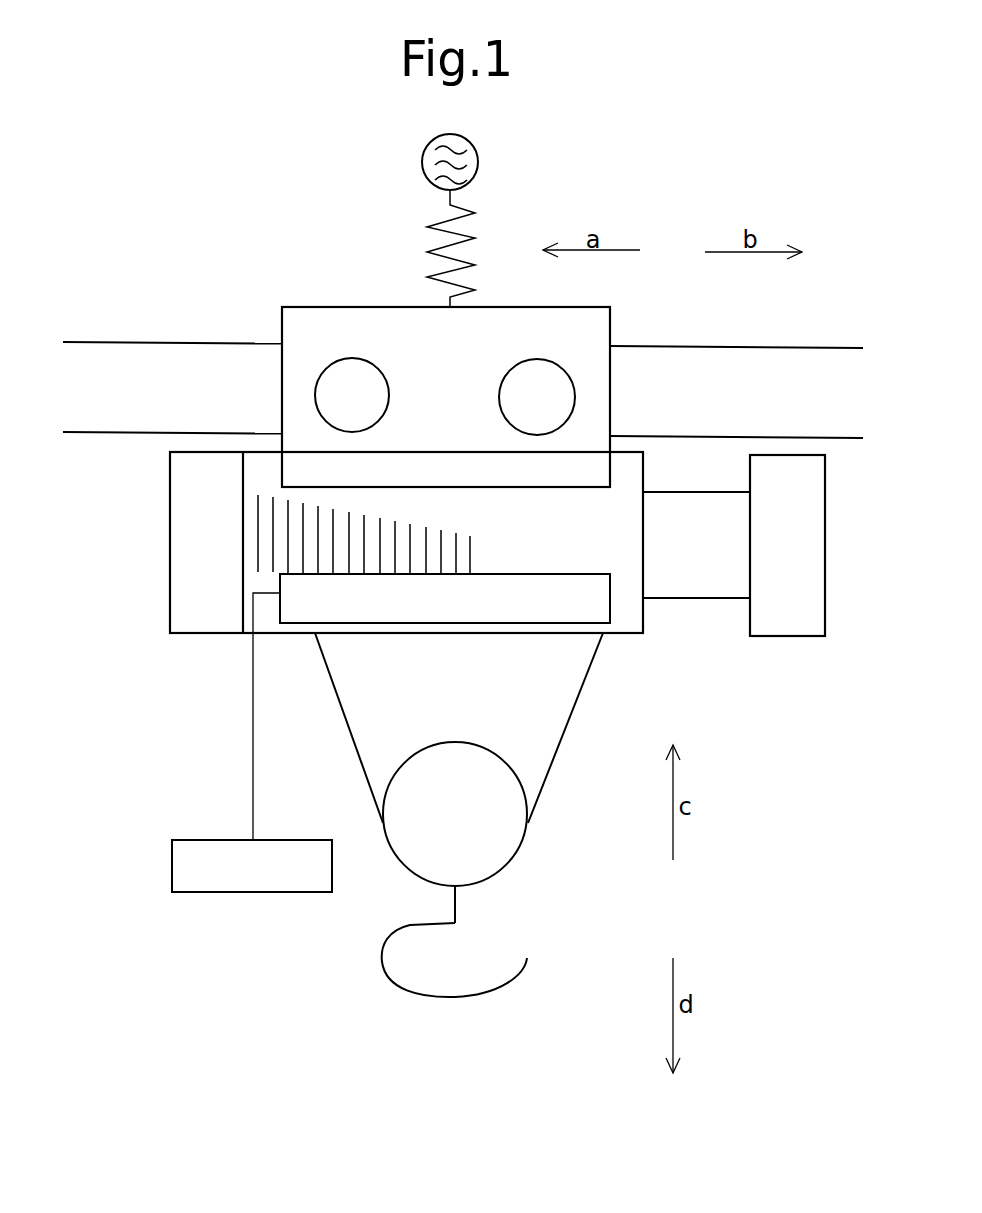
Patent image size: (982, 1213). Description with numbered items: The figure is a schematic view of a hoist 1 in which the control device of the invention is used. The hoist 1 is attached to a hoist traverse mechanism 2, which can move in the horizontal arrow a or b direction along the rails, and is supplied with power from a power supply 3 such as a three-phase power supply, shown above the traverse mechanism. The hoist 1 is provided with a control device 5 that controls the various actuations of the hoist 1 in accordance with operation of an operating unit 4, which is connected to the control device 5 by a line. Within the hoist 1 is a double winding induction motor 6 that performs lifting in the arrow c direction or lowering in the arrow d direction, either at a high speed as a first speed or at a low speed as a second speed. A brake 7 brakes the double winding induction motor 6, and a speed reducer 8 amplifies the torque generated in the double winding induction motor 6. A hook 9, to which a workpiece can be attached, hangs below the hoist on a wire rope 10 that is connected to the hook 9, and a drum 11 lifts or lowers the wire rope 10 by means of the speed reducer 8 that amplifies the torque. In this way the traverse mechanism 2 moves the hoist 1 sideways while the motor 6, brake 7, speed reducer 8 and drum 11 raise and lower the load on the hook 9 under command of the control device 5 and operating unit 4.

The hoist 1 is at (237, 642).
The hoist traverse mechanism 2 is at (316, 290).
The power supply 3 is at (478, 156).
The operating unit 4 is at (232, 892).
The control device 5 is at (592, 574).
The double winding induction motor 6 is at (697, 598).
The brake 7 is at (810, 565).
The speed reducer 8 is at (168, 592).
The hook 9 is at (382, 968).
The wire rope 10 is at (348, 730).
The drum 11 is at (258, 537).